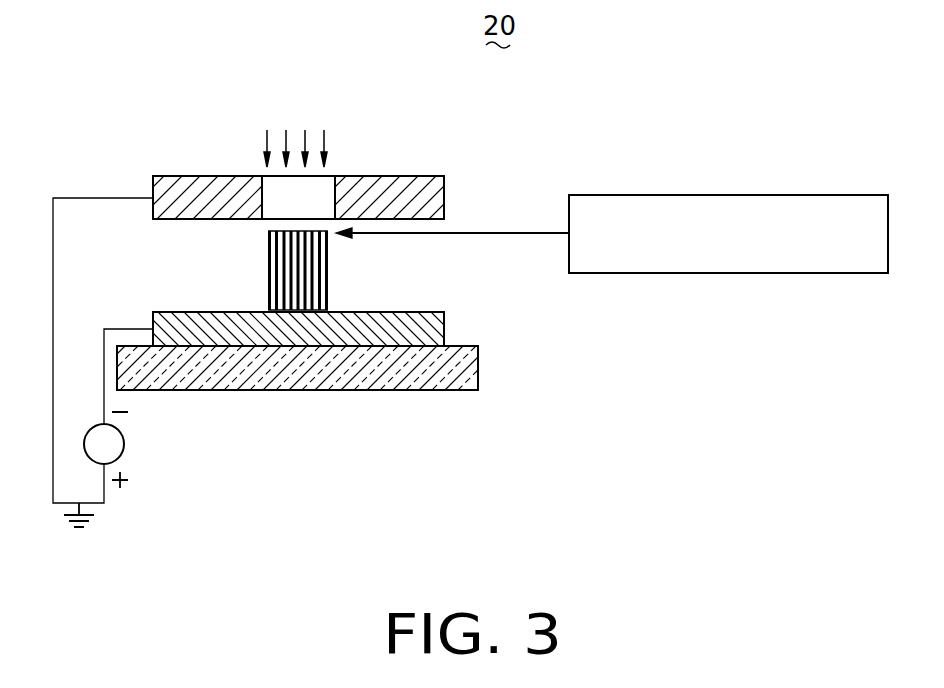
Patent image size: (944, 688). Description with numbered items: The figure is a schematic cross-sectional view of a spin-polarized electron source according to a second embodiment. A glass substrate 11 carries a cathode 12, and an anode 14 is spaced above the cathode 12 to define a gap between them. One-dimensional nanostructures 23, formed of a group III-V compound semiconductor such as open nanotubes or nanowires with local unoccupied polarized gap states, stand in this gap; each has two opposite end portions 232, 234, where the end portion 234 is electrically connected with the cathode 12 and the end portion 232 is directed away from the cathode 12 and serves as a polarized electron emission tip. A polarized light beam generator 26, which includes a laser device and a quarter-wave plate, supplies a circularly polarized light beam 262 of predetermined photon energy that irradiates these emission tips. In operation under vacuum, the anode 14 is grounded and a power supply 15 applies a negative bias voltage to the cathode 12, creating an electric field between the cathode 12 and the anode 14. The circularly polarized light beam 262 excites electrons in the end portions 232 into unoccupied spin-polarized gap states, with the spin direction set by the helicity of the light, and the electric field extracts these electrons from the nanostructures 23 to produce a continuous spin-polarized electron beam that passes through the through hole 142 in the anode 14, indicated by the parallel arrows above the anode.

The glass substrate 11 is at (458, 368).
The cathode 12 is at (432, 333).
The anode 14 is at (407, 185).
The through hole 142 is at (323, 185).
The power supply 15 is at (118, 445).
The one-dimensional nanostructures 23 is at (328, 272).
The end portion 232 is at (270, 236).
The end portion 234 is at (270, 299).
The polarized light beam generator 26 is at (737, 195).
The circularly polarized light beam 262 is at (467, 233).